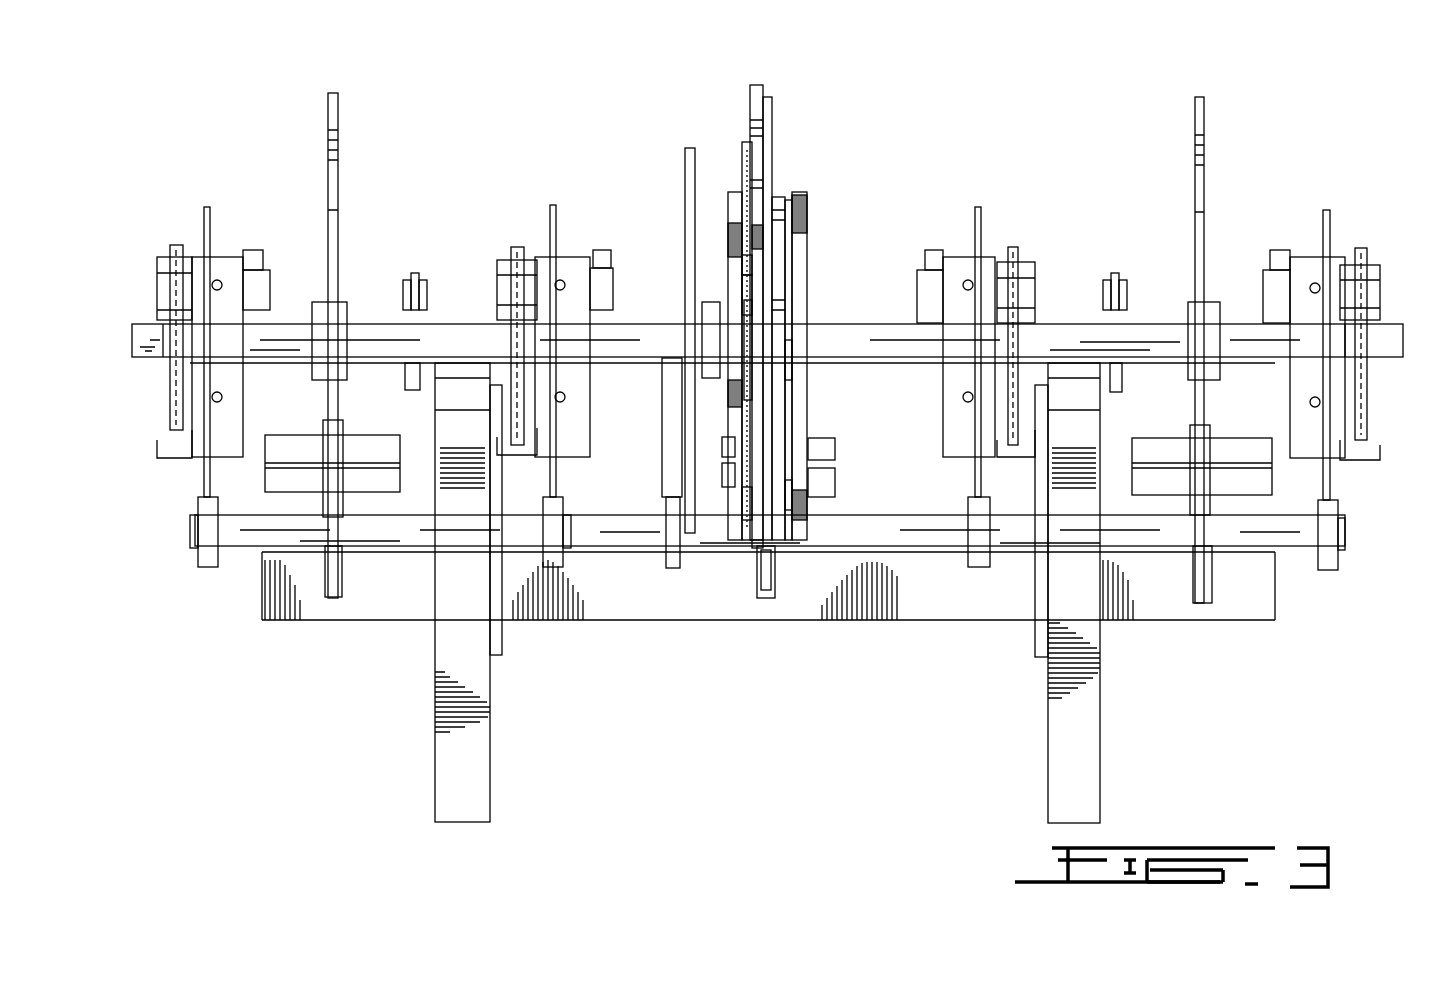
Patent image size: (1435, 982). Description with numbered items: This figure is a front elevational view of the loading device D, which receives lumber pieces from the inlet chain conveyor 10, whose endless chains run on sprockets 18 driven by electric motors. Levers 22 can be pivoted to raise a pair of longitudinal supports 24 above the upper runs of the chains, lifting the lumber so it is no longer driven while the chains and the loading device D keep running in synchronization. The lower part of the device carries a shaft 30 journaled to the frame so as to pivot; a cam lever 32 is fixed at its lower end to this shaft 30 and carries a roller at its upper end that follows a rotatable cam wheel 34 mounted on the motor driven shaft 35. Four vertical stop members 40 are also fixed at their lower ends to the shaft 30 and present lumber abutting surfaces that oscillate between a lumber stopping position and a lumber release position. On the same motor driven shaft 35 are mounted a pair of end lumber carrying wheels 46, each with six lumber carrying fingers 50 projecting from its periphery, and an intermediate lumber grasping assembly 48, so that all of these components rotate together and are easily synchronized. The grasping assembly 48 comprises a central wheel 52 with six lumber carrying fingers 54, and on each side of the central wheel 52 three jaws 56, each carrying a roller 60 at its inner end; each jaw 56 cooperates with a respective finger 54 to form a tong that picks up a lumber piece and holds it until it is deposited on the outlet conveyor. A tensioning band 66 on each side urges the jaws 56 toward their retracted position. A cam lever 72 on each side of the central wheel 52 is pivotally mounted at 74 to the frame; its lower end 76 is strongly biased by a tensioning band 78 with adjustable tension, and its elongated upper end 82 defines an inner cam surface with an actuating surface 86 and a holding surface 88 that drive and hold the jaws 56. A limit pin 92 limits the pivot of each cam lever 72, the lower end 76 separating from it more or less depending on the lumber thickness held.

The inlet chain conveyor 10 is at (152, 270).
The sprockets 18 is at (172, 383).
The levers 22 is at (412, 378).
The longitudinal supports 24 is at (415, 275).
The shaft 30 is at (620, 535).
The cam lever 32 is at (665, 425).
The cam wheel 34 is at (688, 150).
The motor driven shaft 35 is at (1072, 333).
The vertical stop members 40 is at (210, 218).
The end lumber carrying wheels 46 is at (338, 115).
The intermediate lumber grasping assembly 48 is at (762, 85).
The lumber carrying fingers 50 is at (338, 232).
The central wheel 52 is at (768, 140).
The lumber carrying fingers 54 is at (770, 110).
The jaws 56 is at (748, 95).
The roller 60 is at (730, 238).
The tensioning band 66 is at (745, 140).
The cam lever 72 is at (725, 190).
The pivot mounting 74 is at (727, 447).
The lower end 76 is at (737, 500).
The tensioning band 78 is at (752, 530).
The elongated upper end 82 is at (730, 262).
The actuating surface 86 is at (795, 360).
The holding surface 88 is at (733, 290).
The limit pin 92 is at (727, 475).
The loading device D is at (1302, 135).